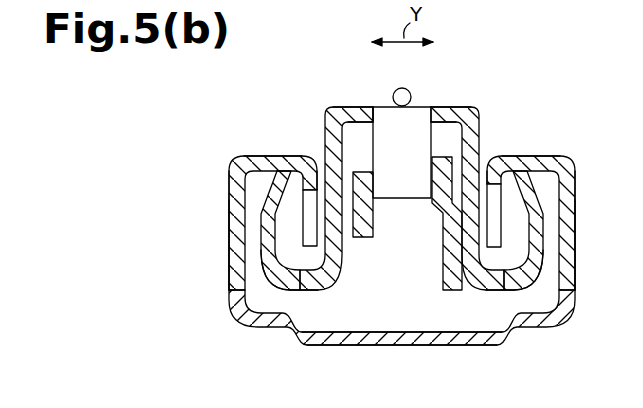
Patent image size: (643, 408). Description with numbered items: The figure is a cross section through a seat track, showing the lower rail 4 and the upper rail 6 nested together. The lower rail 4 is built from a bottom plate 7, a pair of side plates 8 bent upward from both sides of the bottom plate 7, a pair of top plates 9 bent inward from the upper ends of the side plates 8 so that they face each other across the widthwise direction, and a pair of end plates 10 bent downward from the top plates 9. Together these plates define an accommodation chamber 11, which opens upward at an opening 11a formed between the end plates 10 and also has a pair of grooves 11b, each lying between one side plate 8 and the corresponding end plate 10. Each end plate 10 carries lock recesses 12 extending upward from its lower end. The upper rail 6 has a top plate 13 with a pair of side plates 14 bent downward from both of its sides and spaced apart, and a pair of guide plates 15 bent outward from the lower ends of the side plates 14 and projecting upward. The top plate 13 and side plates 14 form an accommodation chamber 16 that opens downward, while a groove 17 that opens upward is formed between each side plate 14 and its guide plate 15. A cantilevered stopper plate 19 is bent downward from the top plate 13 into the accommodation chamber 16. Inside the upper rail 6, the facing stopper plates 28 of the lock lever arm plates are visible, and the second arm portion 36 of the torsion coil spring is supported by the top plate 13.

The lower rail 4 is at (435, 348).
The upper rail 6 is at (456, 100).
The bottom plate 7 is at (368, 341).
The side plates 8 is at (230, 236).
The top plates 9 is at (262, 157).
The end plates 10 is at (288, 172).
The accommodation chamber 11 is at (404, 321).
The opening 11a is at (317, 173).
The grooves 11b is at (257, 177).
The lock recesses 12 is at (306, 240).
The top plate 13 is at (364, 110).
The side plates 14 is at (325, 131).
The guide plates 15 is at (282, 187).
The accommodation chamber 16 is at (443, 120).
The groove 17 is at (298, 283).
The stopper plate 19 is at (403, 199).
The stopper plate 28 is at (358, 238).
The second arm portion 36 is at (403, 88).